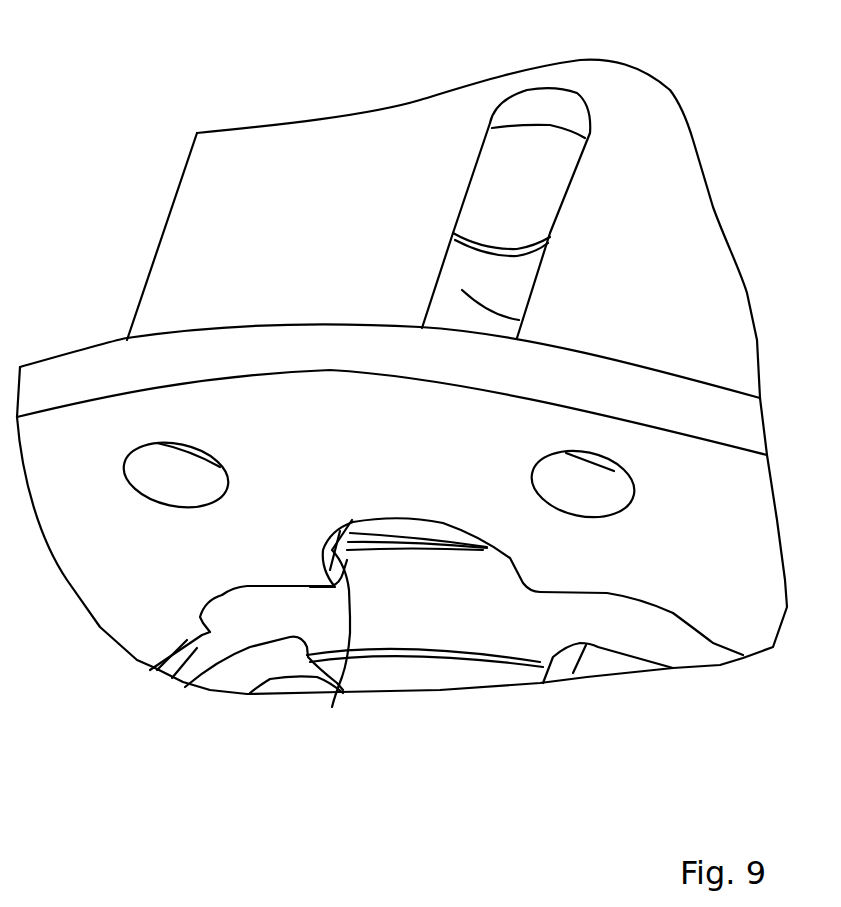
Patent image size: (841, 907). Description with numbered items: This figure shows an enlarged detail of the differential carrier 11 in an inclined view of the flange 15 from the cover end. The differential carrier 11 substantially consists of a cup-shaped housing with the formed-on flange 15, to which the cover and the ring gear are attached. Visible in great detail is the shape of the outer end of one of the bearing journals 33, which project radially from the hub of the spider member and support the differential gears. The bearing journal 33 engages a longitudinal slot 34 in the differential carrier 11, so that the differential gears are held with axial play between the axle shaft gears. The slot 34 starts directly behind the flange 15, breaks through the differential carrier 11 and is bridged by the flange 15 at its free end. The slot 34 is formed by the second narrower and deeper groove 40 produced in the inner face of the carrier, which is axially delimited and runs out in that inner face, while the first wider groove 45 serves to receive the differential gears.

The differential carrier 11 is at (345, 146).
The flange 15 is at (725, 597).
The bearing journals 33 is at (497, 167).
The longitudinal slots 34 is at (452, 300).
The second narrower and deeper grooves 40 is at (332, 707).
The first wider grooves 45 is at (212, 633).